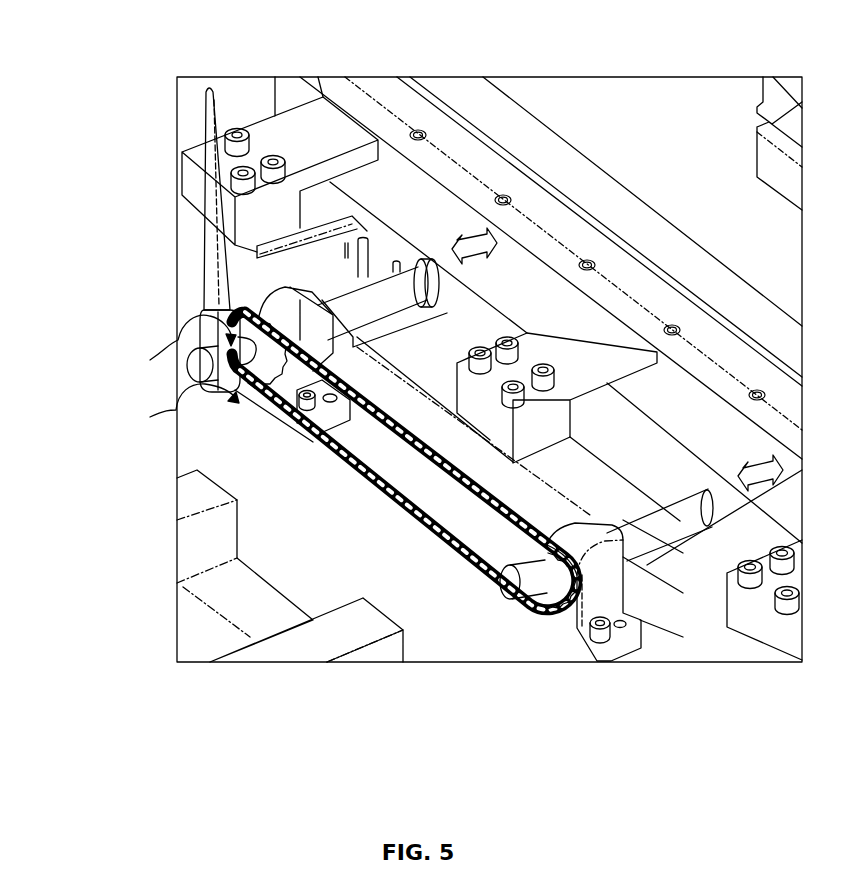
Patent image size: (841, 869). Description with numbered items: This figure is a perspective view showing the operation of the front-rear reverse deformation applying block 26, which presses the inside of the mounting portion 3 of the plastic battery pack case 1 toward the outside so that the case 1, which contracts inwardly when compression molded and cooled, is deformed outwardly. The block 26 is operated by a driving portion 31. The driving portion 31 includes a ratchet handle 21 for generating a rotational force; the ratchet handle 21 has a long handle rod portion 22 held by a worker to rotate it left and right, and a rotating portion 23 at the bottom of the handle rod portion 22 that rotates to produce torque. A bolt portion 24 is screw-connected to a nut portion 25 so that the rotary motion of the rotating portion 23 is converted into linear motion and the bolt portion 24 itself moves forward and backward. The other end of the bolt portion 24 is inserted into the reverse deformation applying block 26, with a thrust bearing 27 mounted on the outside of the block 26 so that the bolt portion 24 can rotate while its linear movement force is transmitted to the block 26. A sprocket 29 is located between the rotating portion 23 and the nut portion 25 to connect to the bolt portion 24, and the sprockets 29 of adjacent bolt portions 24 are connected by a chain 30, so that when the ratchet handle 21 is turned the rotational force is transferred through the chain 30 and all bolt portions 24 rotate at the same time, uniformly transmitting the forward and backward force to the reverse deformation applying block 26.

The case 1 is at (644, 276).
The mounting portion 3 is at (535, 200).
The ratchet handle 21 is at (97, 265).
The handle rod portion 22 is at (207, 257).
The rotating portion 23 is at (222, 325).
The bolt portion 24 is at (335, 308).
The nut portion 25 is at (620, 593).
The reverse deformation applying block 26 is at (372, 177).
The thrust bearing 27 is at (417, 259).
The sprocket 29 is at (562, 600).
The chain 30 is at (494, 568).
The driving portion 31 is at (194, 415).